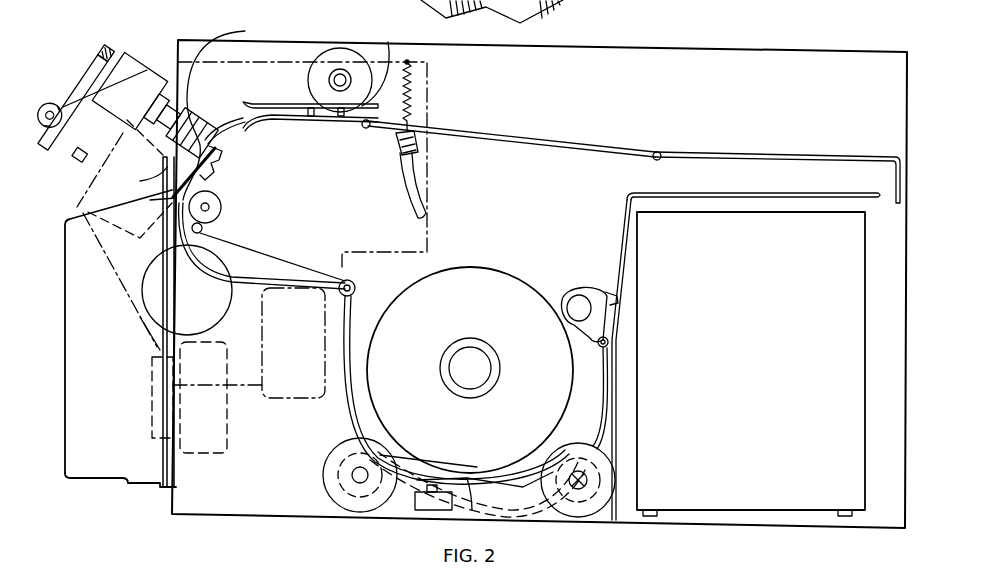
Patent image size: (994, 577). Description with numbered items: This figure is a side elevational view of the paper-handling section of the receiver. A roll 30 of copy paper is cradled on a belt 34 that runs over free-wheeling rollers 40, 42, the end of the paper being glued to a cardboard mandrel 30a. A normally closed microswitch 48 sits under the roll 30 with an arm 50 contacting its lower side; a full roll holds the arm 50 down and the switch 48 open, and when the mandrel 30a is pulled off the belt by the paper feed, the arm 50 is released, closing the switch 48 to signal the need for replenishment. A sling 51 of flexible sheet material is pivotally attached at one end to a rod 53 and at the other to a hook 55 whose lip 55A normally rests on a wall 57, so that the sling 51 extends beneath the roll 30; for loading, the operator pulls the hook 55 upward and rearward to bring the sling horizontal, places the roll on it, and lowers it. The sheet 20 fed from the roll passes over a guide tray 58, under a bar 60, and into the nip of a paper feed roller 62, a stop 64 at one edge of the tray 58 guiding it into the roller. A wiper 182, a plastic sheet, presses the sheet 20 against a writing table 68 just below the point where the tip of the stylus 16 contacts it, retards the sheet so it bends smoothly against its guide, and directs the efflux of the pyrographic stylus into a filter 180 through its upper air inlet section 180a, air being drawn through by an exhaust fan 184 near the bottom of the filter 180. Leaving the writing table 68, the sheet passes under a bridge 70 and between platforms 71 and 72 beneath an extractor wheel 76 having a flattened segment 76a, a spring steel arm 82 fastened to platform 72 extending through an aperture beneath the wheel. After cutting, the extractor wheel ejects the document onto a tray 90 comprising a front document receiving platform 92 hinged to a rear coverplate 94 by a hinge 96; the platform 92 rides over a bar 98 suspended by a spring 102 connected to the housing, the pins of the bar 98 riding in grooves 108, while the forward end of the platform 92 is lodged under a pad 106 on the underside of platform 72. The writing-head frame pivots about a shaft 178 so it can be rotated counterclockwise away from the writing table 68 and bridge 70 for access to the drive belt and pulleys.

The stylus 16 is at (245, 31).
The sheet 20 is at (283, 256).
The roll 30 is at (472, 436).
The cardboard mandrel 30a is at (443, 347).
The belt 34 is at (572, 443).
The free-wheeling roller 40 is at (345, 450).
The free-wheeling roller 42 is at (615, 474).
The microswitch 48 is at (423, 508).
The arm 50 is at (500, 524).
The sling 51 is at (606, 381).
The rod 53 is at (353, 288).
The hook 55 is at (580, 286).
The lip 55A is at (618, 300).
The wall 57 is at (617, 415).
The guide tray 58 is at (267, 278).
The bar 60 is at (203, 228).
The paper feed roller 62 is at (222, 206).
The stop 64 is at (331, 262).
The writing table 68 is at (205, 170).
The bridge 70 is at (232, 121).
The platform 71 is at (270, 103).
The platform 72 is at (270, 122).
The extractor wheel 76 is at (343, 49).
The flattened segment 76a is at (388, 42).
The spring steel arm 82 is at (338, 125).
The tray 90 is at (557, 127).
The front document receiving platform 92 is at (508, 138).
The rear coverplate 94 is at (757, 158).
The hinge 96 is at (658, 152).
The bar 98 is at (414, 153).
The spring 102 is at (398, 82).
The pad 106 is at (368, 130).
The groove 108 is at (428, 216).
The shaft 178 is at (52, 103).
The filter 180 is at (130, 490).
The inlet section 180a is at (140, 181).
The wiper 182 is at (150, 200).
The exhaust fan 184 is at (228, 417).